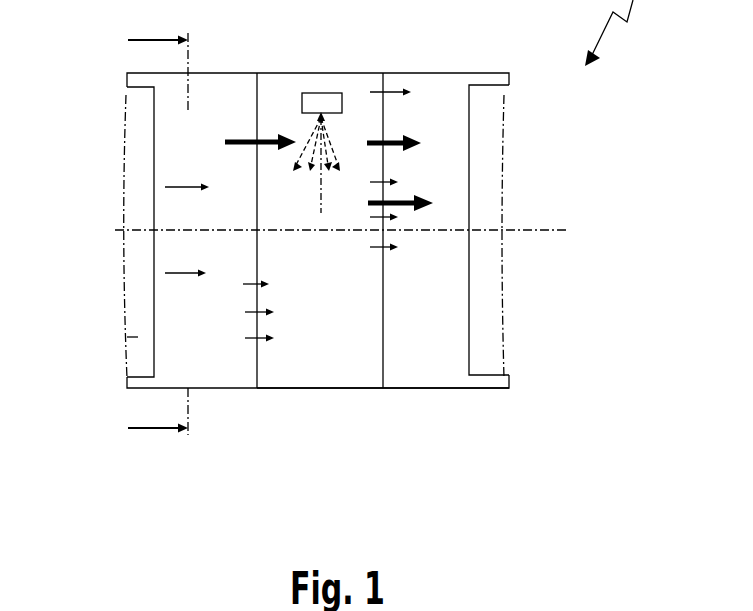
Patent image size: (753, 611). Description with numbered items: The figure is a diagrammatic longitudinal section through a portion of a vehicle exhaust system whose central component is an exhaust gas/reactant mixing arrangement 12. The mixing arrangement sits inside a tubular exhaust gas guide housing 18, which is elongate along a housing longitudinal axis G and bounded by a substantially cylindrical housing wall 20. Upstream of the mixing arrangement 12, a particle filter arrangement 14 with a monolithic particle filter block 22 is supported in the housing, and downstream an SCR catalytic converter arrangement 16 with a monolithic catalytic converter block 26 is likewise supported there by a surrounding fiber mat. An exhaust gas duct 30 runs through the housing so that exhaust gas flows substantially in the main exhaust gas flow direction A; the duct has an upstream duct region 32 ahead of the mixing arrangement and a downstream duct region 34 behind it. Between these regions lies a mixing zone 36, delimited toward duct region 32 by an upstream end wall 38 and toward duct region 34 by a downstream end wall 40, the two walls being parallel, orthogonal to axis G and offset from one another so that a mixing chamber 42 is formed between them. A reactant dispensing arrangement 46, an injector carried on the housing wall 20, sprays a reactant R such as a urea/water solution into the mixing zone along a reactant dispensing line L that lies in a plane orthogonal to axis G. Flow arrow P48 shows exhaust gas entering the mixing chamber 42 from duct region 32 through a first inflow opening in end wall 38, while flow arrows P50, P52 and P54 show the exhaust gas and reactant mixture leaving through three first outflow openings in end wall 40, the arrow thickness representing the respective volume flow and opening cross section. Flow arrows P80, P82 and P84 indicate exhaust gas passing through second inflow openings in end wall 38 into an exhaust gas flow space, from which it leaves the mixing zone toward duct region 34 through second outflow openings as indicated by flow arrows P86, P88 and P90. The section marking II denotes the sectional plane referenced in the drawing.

The exhaust gas/reactant mixing arrangement 12 is at (406, 438).
The particle filter arrangement 14 is at (116, 272).
The SCR catalytic converter arrangement 16 is at (513, 120).
The exhaust gas guide housing 18 is at (357, 393).
The housing wall 20 is at (493, 390).
The particle filter block 22 is at (125, 337).
The catalytic converter block 26 is at (508, 175).
The exhaust gas duct 30 is at (232, 375).
The duct region 32 is at (172, 145).
The duct region 34 is at (437, 290).
The mixing zone 36 is at (330, 460).
The upstream end wall 38 is at (258, 380).
The downstream end wall 40 is at (388, 377).
The mixing chamber 42 is at (276, 120).
The reactant dispensing arrangement 46 is at (325, 93).
The reactant R is at (333, 152).
The reactant dispensing line L is at (320, 195).
The main exhaust gas flow direction A is at (180, 276).
The housing longitudinal axis G is at (538, 232).
The section line II is at (158, 236).
The flow arrow P48 is at (245, 140).
The flow arrow P50 is at (400, 198).
The flow arrow P52 is at (393, 137).
The flow arrow P54 is at (400, 88).
The flow arrow P80 is at (258, 284).
The flow arrow P82 is at (247, 312).
The flow arrow P84 is at (250, 338).
The flow arrow P86 is at (392, 247).
The flow arrow P88 is at (371, 217).
The flow arrow P90 is at (370, 182).